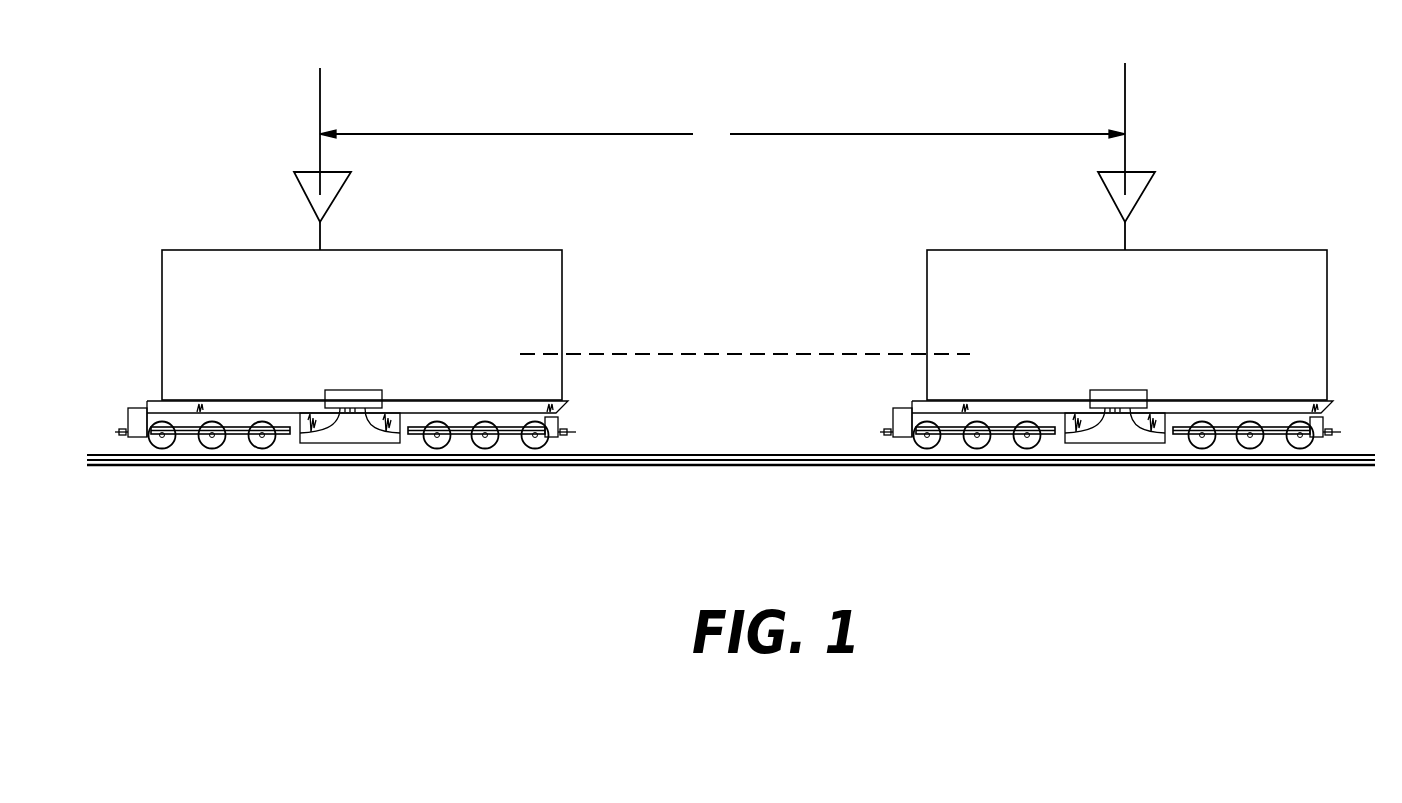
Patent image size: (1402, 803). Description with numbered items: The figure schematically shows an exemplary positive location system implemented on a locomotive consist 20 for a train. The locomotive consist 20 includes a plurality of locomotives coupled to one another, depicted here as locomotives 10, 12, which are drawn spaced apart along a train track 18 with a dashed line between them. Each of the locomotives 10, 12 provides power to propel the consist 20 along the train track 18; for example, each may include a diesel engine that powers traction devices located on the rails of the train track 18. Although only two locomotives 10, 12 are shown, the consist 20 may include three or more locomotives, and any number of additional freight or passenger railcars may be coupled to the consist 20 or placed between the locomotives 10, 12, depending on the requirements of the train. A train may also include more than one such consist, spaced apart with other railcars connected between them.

The locomotive 10 is at (365, 361).
The locomotive 12 is at (1110, 361).
The train track 18 is at (657, 455).
The locomotive consist 20 is at (1222, 150).